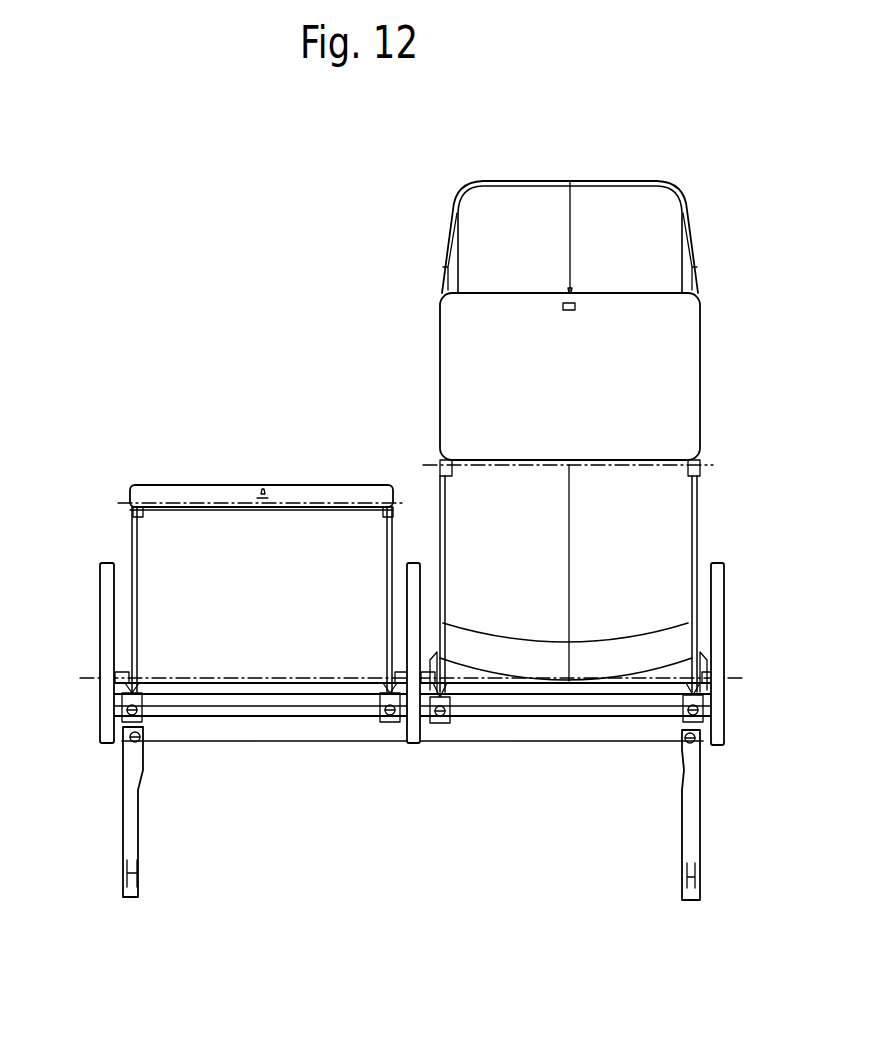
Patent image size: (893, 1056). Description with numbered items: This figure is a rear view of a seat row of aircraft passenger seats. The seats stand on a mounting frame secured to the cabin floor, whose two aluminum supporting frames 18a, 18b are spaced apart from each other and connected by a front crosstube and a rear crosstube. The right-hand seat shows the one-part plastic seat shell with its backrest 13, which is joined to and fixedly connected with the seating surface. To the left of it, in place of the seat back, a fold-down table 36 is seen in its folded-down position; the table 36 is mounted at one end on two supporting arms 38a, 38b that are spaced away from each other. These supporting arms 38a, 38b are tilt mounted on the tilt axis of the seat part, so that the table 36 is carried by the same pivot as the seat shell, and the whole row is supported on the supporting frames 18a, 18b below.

The table 36 is at (193, 487).
The backrest 13 is at (635, 557).
The supporting arm 38a is at (138, 582).
The supporting arm 38b is at (385, 588).
The supporting frame 18a is at (130, 808).
The supporting frame 18b is at (692, 818).